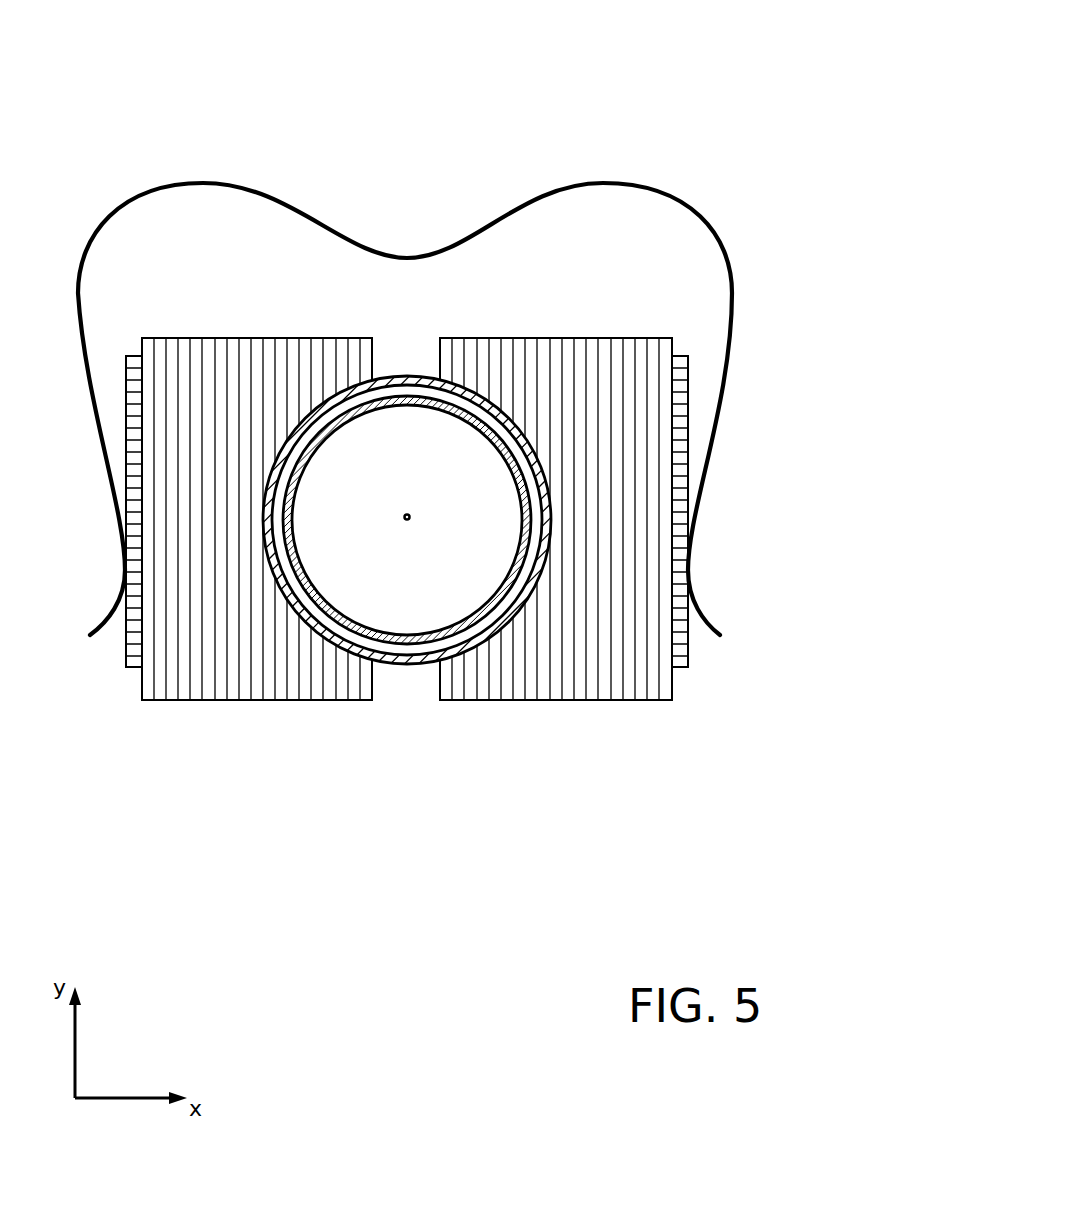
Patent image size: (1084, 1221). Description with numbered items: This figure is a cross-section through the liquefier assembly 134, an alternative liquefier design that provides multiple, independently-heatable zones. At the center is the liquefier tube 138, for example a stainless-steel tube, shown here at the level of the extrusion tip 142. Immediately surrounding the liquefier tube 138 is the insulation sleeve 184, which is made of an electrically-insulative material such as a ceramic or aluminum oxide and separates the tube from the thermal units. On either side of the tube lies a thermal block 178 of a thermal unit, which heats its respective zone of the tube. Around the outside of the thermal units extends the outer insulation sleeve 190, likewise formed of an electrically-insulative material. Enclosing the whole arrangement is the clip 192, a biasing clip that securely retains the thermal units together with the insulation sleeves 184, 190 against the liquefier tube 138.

The liquefier assembly 134 is at (695, 47).
The liquefier tube 138 is at (386, 441).
The extrusion tip 142 is at (352, 642).
The thermal block 178 is at (263, 700).
The insulation sleeve 184 is at (336, 405).
The outer insulation sleeve 190 is at (128, 650).
The clip 192 is at (588, 183).